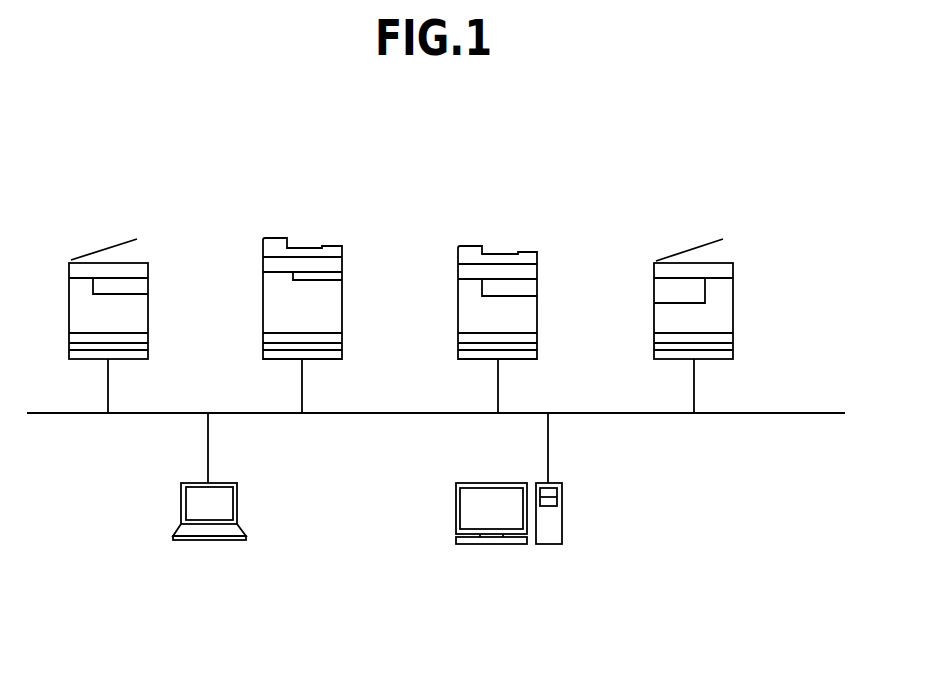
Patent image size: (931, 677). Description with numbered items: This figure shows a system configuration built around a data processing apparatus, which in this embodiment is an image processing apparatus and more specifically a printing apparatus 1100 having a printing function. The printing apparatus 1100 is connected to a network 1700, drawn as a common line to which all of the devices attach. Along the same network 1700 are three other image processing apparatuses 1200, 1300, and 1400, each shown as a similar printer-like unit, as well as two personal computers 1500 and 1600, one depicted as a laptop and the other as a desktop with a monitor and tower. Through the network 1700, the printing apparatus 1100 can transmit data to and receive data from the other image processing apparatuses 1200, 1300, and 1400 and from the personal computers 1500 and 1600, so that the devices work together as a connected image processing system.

The printing apparatus 1100 is at (103, 253).
The image processing apparatus 1200 is at (302, 247).
The image processing apparatus 1300 is at (497, 254).
The image processing apparatus 1400 is at (683, 251).
The personal computer 1500 is at (210, 542).
The personal computer 1600 is at (547, 544).
The network 1700 is at (782, 414).